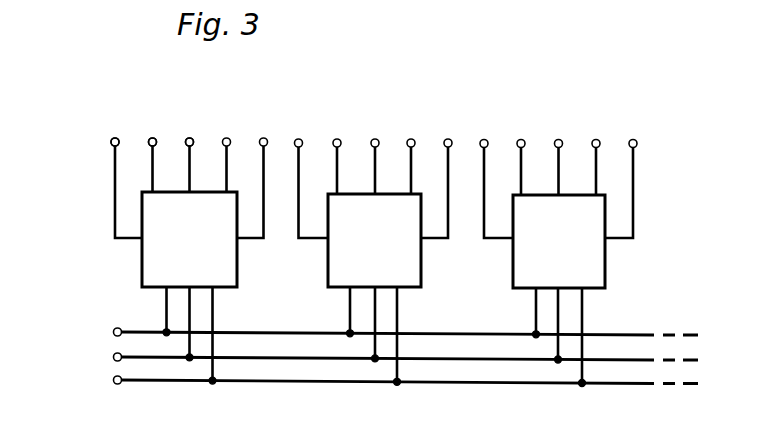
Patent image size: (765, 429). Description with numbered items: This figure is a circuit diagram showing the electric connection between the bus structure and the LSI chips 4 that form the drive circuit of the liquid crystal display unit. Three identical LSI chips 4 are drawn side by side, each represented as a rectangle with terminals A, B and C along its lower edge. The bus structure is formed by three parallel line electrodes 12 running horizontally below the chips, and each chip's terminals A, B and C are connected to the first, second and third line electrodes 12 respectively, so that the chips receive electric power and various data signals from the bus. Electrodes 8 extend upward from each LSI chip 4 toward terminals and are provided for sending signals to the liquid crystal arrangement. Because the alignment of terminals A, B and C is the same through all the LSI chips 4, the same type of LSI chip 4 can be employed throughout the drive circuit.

The LSI chip 4 is at (141, 272).
The electrodes 8 is at (115, 137).
The line electrodes 12 is at (113, 332).